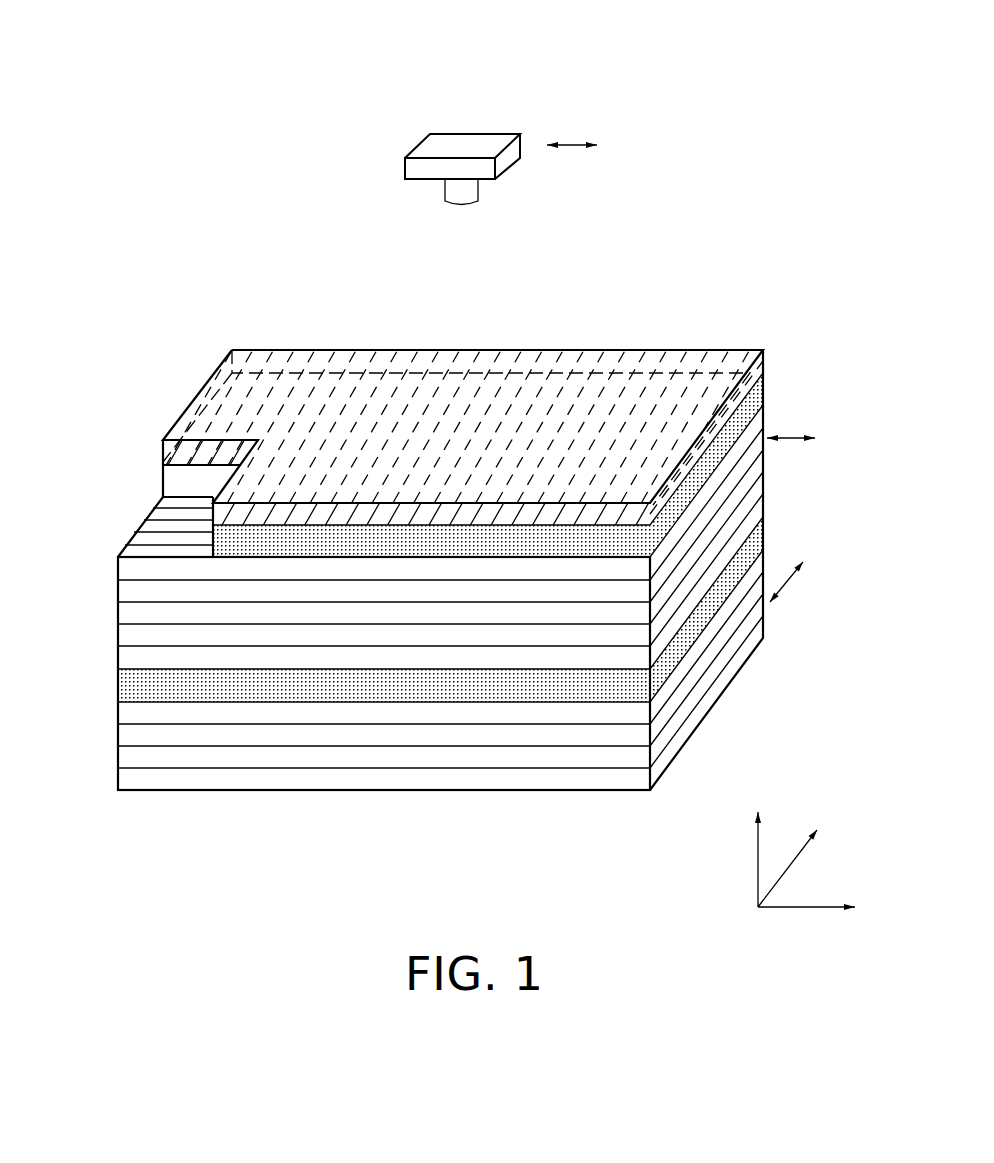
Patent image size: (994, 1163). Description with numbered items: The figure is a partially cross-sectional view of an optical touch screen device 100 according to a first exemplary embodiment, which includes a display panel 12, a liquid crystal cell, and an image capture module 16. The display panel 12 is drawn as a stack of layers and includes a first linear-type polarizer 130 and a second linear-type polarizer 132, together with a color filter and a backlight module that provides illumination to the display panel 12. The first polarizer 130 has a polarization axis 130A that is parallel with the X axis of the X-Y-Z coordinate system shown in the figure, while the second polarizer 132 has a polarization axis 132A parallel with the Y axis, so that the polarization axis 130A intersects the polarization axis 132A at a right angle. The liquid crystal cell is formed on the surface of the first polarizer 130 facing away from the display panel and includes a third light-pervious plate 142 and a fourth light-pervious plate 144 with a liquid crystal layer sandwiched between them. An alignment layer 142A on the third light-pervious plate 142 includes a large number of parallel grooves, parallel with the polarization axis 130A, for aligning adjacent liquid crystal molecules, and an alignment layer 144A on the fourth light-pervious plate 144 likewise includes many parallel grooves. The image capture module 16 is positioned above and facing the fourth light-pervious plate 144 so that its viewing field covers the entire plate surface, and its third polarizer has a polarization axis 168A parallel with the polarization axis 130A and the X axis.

The optical touch screen device 100 is at (482, 28).
The display panel 12 is at (113, 592).
The image capture module 16 is at (432, 145).
The polarization axis 168A is at (570, 142).
The first linear-type polarizer 130 is at (748, 457).
The polarization axis 130A is at (793, 442).
The second linear-type polarizer 132 is at (727, 652).
The polarization axis 132A is at (787, 586).
The third light-pervious plate 142 is at (752, 430).
The alignment layer 142A is at (175, 532).
The fourth light-pervious plate 144 is at (753, 372).
The alignment layer 144A is at (467, 405).